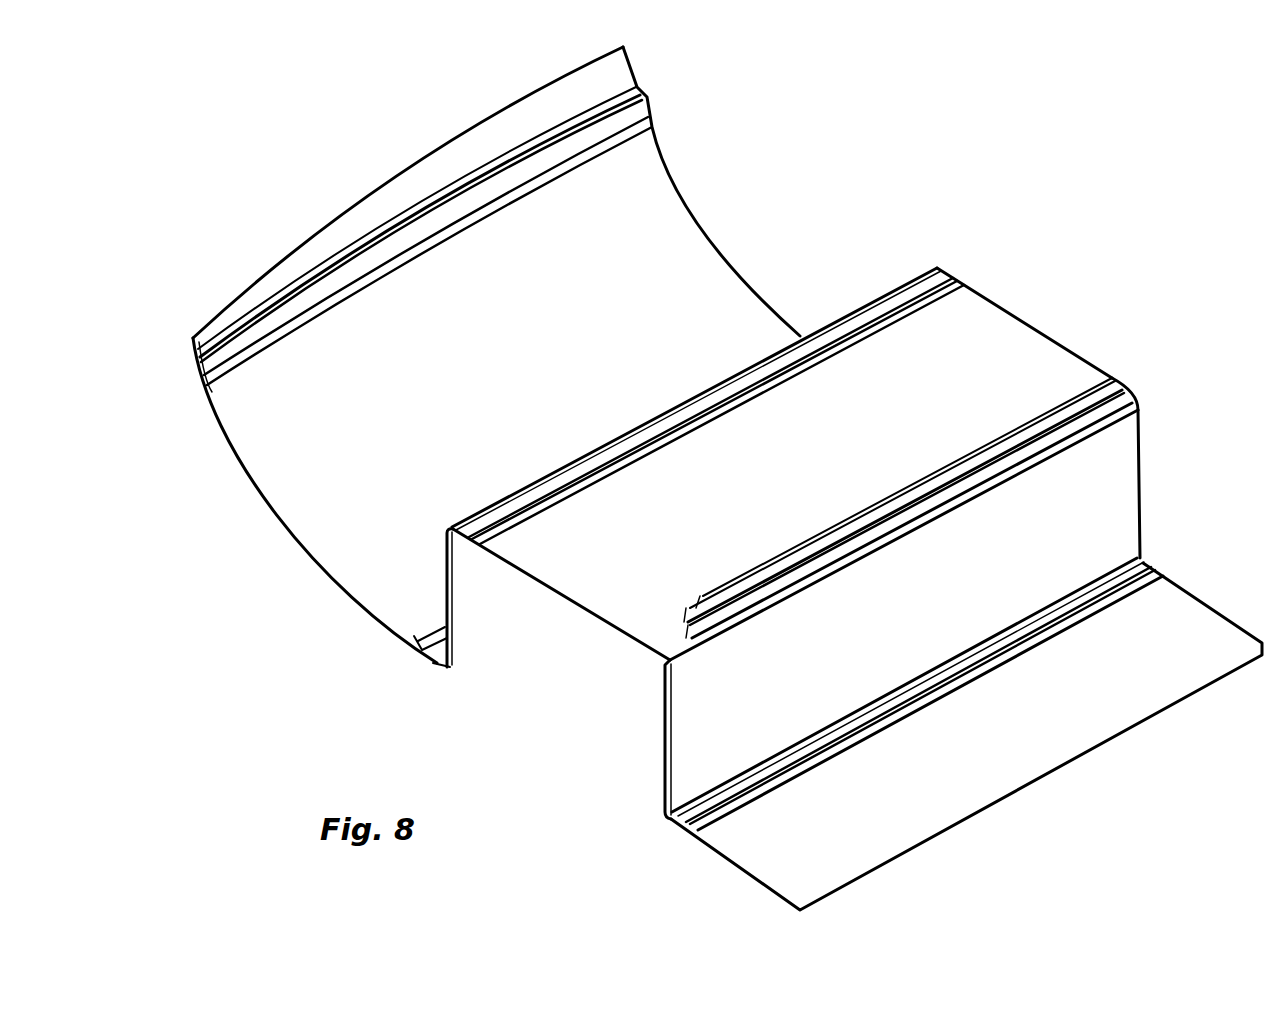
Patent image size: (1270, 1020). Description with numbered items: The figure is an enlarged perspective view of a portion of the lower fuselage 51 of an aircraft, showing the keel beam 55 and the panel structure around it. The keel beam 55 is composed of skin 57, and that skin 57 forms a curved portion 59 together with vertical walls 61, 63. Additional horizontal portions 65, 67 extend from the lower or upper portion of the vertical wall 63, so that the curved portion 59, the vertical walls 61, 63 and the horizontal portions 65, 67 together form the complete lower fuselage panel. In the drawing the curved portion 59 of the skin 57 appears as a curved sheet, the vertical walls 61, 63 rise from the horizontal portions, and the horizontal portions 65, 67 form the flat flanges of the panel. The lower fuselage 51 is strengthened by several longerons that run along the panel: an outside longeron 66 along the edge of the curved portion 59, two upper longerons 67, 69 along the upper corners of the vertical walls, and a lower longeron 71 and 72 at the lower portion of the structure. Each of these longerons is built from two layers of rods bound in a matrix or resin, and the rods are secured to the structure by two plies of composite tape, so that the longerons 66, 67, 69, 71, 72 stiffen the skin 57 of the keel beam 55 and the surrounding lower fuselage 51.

The lower fuselage 51 is at (1114, 768).
The keel beam 55 is at (826, 544).
The skin 57 is at (481, 355).
The curved portion 59 is at (247, 477).
The vertical wall 61 is at (462, 630).
The vertical wall 63 is at (695, 722).
The horizontal portion 65 is at (628, 593).
The outside longeron 66 is at (643, 97).
The horizontal portion / upper longeron 67 is at (940, 270).
The upper longeron 69 is at (1113, 382).
The lower longeron 71 is at (1138, 570).
The lower longeron 72 is at (437, 640).